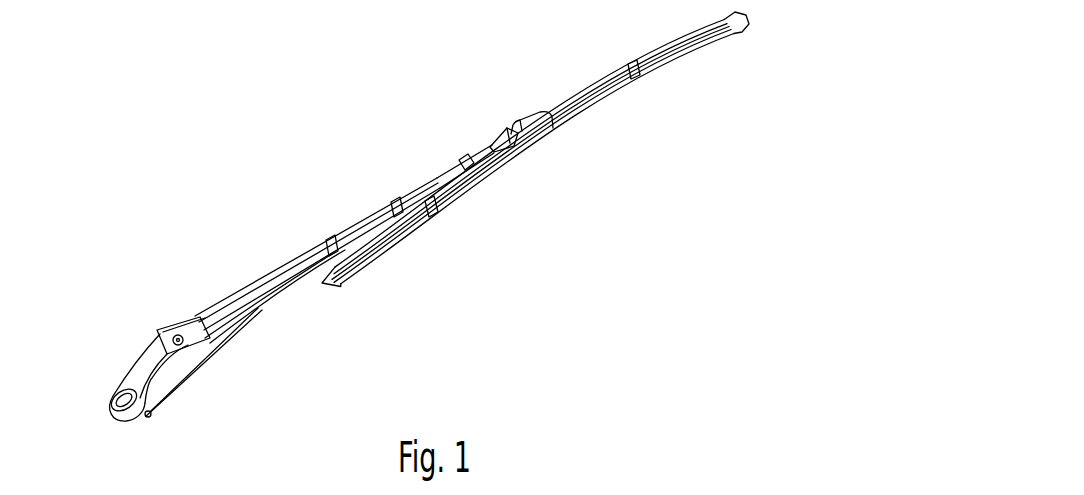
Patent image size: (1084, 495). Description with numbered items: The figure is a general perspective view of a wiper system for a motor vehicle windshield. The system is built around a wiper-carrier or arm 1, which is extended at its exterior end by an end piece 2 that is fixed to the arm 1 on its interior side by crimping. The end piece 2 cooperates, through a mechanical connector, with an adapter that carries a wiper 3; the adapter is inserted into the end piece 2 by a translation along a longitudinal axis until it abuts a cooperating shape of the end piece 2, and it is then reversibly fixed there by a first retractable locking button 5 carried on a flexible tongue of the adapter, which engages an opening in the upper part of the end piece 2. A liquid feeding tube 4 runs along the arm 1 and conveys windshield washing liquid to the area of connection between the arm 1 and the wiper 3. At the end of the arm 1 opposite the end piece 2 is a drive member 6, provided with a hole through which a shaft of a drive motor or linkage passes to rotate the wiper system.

The arm 1 is at (363, 220).
The end piece 2 is at (523, 117).
The wiper 3 is at (630, 80).
The liquid feeding tube 4 is at (213, 347).
The first retractable locking button 5 is at (502, 127).
The drive member 6 is at (137, 367).